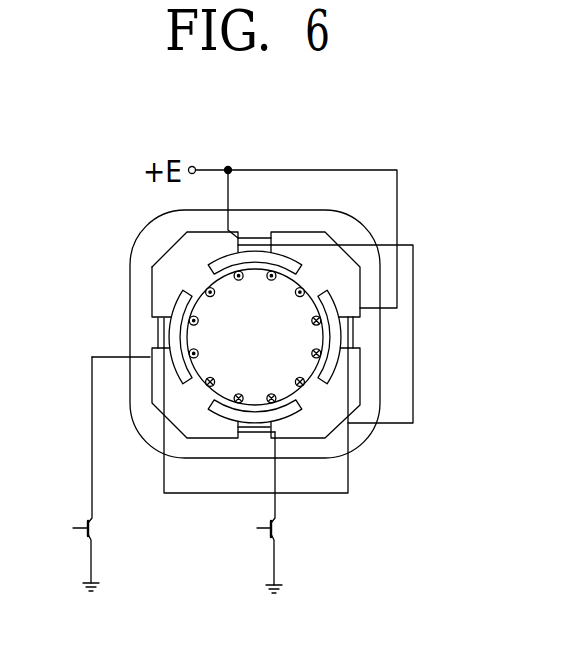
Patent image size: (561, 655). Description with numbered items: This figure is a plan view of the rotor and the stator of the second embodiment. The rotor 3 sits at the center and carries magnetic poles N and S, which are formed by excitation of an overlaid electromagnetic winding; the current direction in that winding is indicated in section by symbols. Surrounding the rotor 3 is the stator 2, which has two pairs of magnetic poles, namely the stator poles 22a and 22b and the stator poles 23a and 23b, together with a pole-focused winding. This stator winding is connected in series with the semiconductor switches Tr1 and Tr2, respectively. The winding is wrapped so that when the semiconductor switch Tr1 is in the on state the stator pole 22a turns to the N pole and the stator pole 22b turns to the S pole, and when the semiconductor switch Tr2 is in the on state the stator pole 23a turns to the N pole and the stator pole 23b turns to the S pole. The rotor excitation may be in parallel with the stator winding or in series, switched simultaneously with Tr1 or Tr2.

The stator 2 is at (157, 236).
The rotor 3 is at (300, 292).
The stator pole 22a is at (255, 253).
The stator pole 22b is at (255, 416).
The stator pole 23a is at (353, 333).
The stator pole 23b is at (163, 346).
The semiconductor switch Tr1 is at (290, 512).
The semiconductor switch Tr2 is at (108, 474).